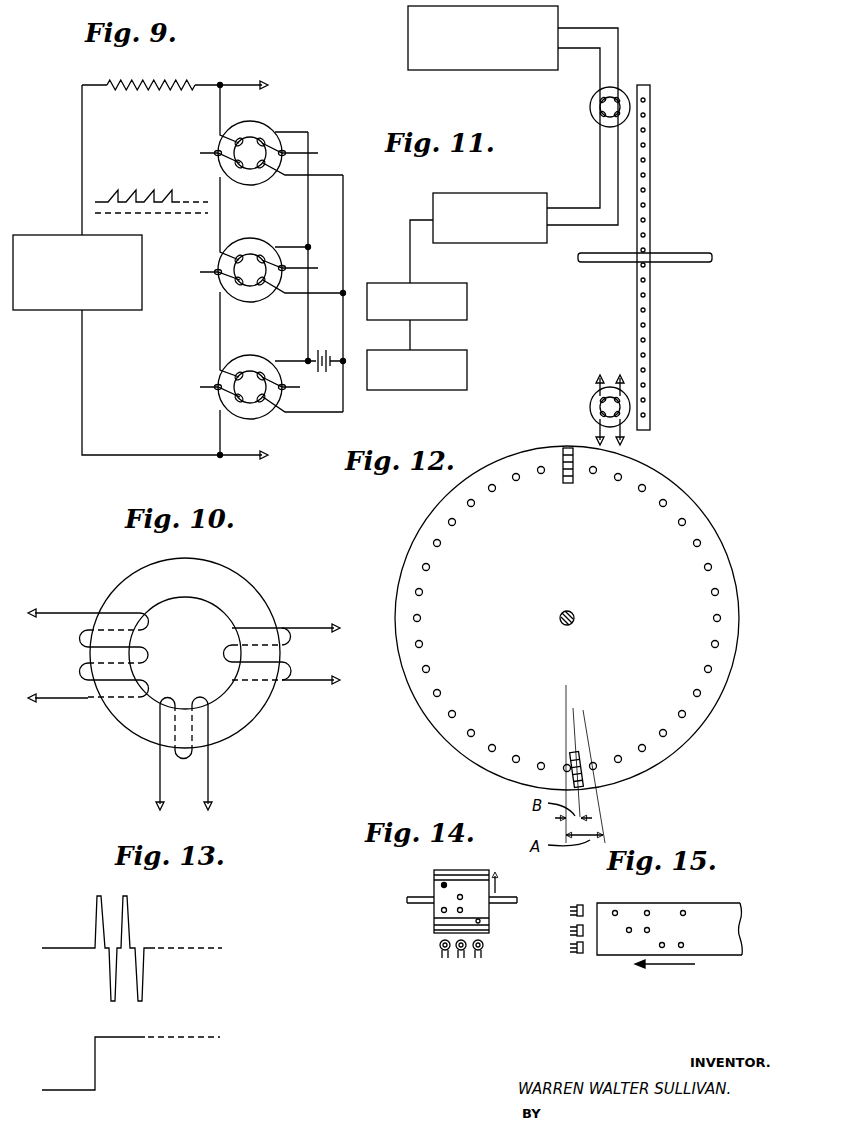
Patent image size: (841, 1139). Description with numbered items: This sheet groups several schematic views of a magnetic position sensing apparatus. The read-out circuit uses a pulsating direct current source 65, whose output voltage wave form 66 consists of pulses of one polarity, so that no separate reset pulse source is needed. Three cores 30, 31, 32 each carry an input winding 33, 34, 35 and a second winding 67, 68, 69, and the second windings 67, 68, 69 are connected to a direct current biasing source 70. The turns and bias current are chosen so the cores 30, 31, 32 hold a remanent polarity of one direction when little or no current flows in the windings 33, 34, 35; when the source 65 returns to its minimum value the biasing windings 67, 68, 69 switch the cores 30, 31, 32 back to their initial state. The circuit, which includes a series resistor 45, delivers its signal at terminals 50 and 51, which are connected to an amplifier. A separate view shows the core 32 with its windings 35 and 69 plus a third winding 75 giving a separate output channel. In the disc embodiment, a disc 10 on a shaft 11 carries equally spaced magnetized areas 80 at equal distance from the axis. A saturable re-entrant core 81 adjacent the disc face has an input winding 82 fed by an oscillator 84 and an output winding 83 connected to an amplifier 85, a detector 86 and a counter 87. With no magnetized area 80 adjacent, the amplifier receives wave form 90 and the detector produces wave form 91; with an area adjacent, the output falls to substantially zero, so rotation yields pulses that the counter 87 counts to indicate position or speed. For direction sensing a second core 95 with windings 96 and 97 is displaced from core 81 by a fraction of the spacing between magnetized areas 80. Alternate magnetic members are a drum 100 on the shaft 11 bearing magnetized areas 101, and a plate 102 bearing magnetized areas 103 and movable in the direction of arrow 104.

In FIG. 11, the disc 10 is at (652, 173).
In FIG. 12, the disc 10 is at (712, 528).
In FIG. 11, the shaft 11 is at (677, 251).
In FIG. 12, the shaft 11 is at (575, 615).
In FIG. 14, the shaft 11 is at (407, 900).
In FIG. 9, the core 30 is at (250, 125).
In FIG. 14, the core 30 is at (442, 955).
In FIG. 15, the core 30 is at (575, 907).
In FIG. 9, the core 31 is at (250, 239).
In FIG. 14, the core 31 is at (461, 955).
In FIG. 15, the core 31 is at (575, 932).
In FIG. 9, the core 32 is at (250, 355).
In FIG. 10, the core 32 is at (240, 596).
In FIG. 14, the core 32 is at (478, 955).
In FIG. 15, the core 32 is at (575, 950).
In FIG. 9, the winding 33 is at (200, 153).
In FIG. 9, the winding 34 is at (200, 272).
In FIG. 9, the winding 35 is at (200, 387).
In FIG. 10, the winding 35 is at (232, 650).
In FIG. 9, the resistor 45 is at (142, 92).
In FIG. 9, the terminal 50 is at (221, 83).
In FIG. 9, the terminal 51 is at (220, 458).
In FIG. 9, the pulsating direct current source 65 is at (38, 312).
In FIG. 9, the output voltage wave form 66 is at (116, 196).
In FIG. 9, the second winding 67 is at (301, 153).
In FIG. 9, the second winding 68 is at (300, 269).
In FIG. 9, the second winding 69 is at (290, 387).
In FIG. 10, the second winding 69 is at (172, 706).
In FIG. 9, the direct current biasing source 70 is at (327, 349).
In FIG. 10, the winding 75 is at (134, 660).
In FIG. 11, the magnetized areas 80 is at (650, 121).
In FIG. 12, the magnetized areas 80 is at (593, 474).
In FIG. 11, the saturable re-entrant magnetic core 81 is at (590, 107).
In FIG. 12, the saturable re-entrant magnetic core 81 is at (568, 485).
In FIG. 11, the input winding 82 is at (606, 87).
In FIG. 11, the output winding 83 is at (605, 126).
In FIG. 11, the oscillator 84 is at (410, 20).
In FIG. 11, the amplifier 85 is at (497, 194).
In FIG. 11, the detector 86 is at (468, 298).
In FIG. 11, the counter 87 is at (468, 361).
In FIG. 13, the voltage wave form 90 is at (95, 907).
In FIG. 13, the detector output wave form 91 is at (93, 1054).
In FIG. 11, the second saturable re-entrant magnetic core 95 is at (593, 399).
In FIG. 12, the second saturable re-entrant magnetic core 95 is at (580, 752).
In FIG. 11, the input winding 96 is at (608, 385).
In FIG. 11, the output winding 97 is at (595, 416).
In FIG. 14, the drum 100 is at (436, 916).
In FIG. 14, the magnetized areas 101 is at (441, 885).
In FIG. 15, the plate 102 is at (705, 918).
In FIG. 15, the magnetized areas 103 is at (627, 929).
In FIG. 15, the arrow 104 is at (683, 944).